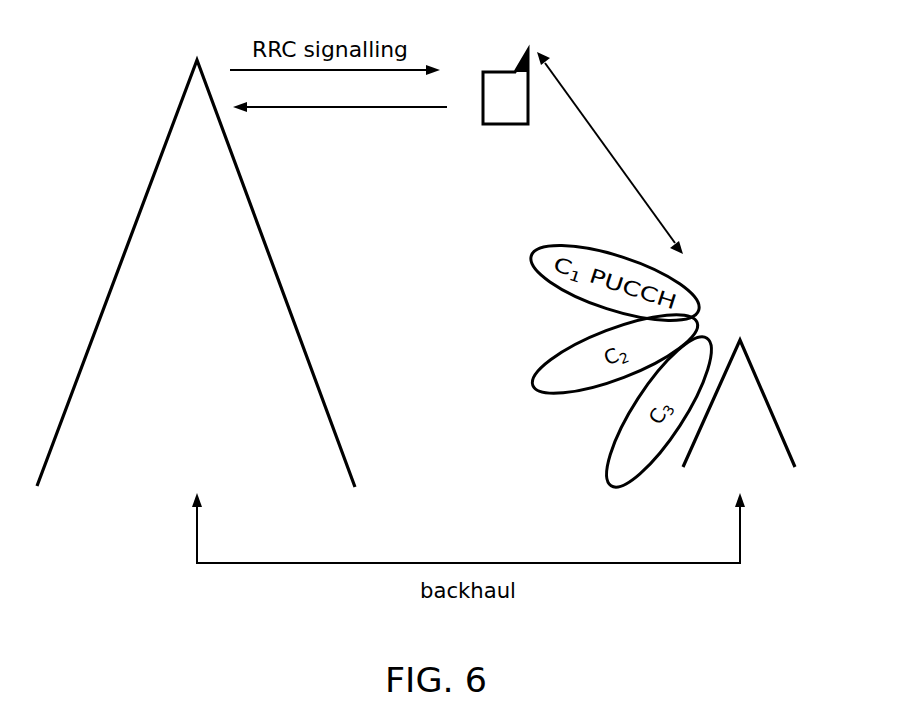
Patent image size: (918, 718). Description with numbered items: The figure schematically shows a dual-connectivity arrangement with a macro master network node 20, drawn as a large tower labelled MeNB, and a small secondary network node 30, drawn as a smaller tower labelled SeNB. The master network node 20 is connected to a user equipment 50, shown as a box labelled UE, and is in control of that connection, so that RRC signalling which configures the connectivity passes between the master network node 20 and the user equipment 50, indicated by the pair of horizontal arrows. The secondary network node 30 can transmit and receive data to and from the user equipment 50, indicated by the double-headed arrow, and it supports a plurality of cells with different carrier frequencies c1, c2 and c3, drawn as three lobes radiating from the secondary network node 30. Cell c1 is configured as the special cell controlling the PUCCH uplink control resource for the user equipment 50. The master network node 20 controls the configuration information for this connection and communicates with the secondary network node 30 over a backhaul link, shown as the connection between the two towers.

The master network node 20 is at (197, 60).
The user equipment 50 is at (528, 50).
The secondary network node 30 is at (752, 362).